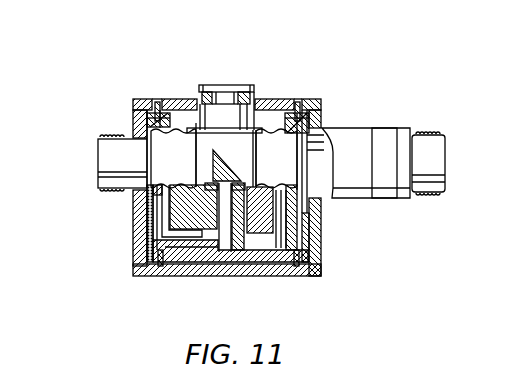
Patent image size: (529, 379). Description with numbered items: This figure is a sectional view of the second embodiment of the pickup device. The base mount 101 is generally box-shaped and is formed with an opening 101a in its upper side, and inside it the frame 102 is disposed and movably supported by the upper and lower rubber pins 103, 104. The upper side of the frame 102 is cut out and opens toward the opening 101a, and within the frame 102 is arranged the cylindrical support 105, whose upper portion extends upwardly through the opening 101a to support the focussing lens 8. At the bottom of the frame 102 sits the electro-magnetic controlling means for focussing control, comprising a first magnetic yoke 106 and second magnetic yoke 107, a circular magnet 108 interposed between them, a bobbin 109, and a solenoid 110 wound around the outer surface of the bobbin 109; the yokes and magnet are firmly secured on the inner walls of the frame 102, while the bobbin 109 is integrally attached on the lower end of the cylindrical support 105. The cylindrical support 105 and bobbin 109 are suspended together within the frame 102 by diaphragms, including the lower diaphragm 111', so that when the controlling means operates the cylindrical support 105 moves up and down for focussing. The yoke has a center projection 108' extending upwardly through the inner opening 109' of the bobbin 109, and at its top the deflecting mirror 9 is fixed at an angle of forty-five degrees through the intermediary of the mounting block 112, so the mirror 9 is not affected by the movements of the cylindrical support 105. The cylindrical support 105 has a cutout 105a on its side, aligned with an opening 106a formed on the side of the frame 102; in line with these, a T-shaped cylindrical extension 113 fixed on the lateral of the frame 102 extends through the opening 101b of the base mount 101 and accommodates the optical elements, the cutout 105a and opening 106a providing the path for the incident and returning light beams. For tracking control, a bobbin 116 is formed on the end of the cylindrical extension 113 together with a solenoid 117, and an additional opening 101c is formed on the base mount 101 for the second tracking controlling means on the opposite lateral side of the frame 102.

The focussing lens 8 is at (227, 84).
The deflecting mirror 9 is at (255, 142).
The base mount 101 is at (331, 265).
The opening 101a is at (197, 100).
The opening 101b is at (312, 120).
The additional opening 101c is at (133, 135).
The frame 102 is at (152, 117).
The upper rubber pin 103 is at (152, 100).
The lower rubber pin 104 is at (160, 276).
The cylindrical support 105 is at (238, 103).
The cutout 105a is at (252, 170).
The first magnetic yoke 106 is at (150, 247).
The opening 106a is at (302, 170).
The second magnetic yoke 107 is at (143, 202).
The circular magnet 108 is at (109, 232).
The center projection 108' is at (230, 279).
The bobbin 109 is at (308, 224).
The inner opening 109' is at (196, 251).
The solenoid 110 is at (300, 212).
The lower diaphragm 111' is at (110, 223).
The mounting block 112 is at (208, 163).
The cylindrical extension 113 is at (386, 142).
The bobbin 116 is at (104, 160).
The solenoid 117 is at (97, 135).